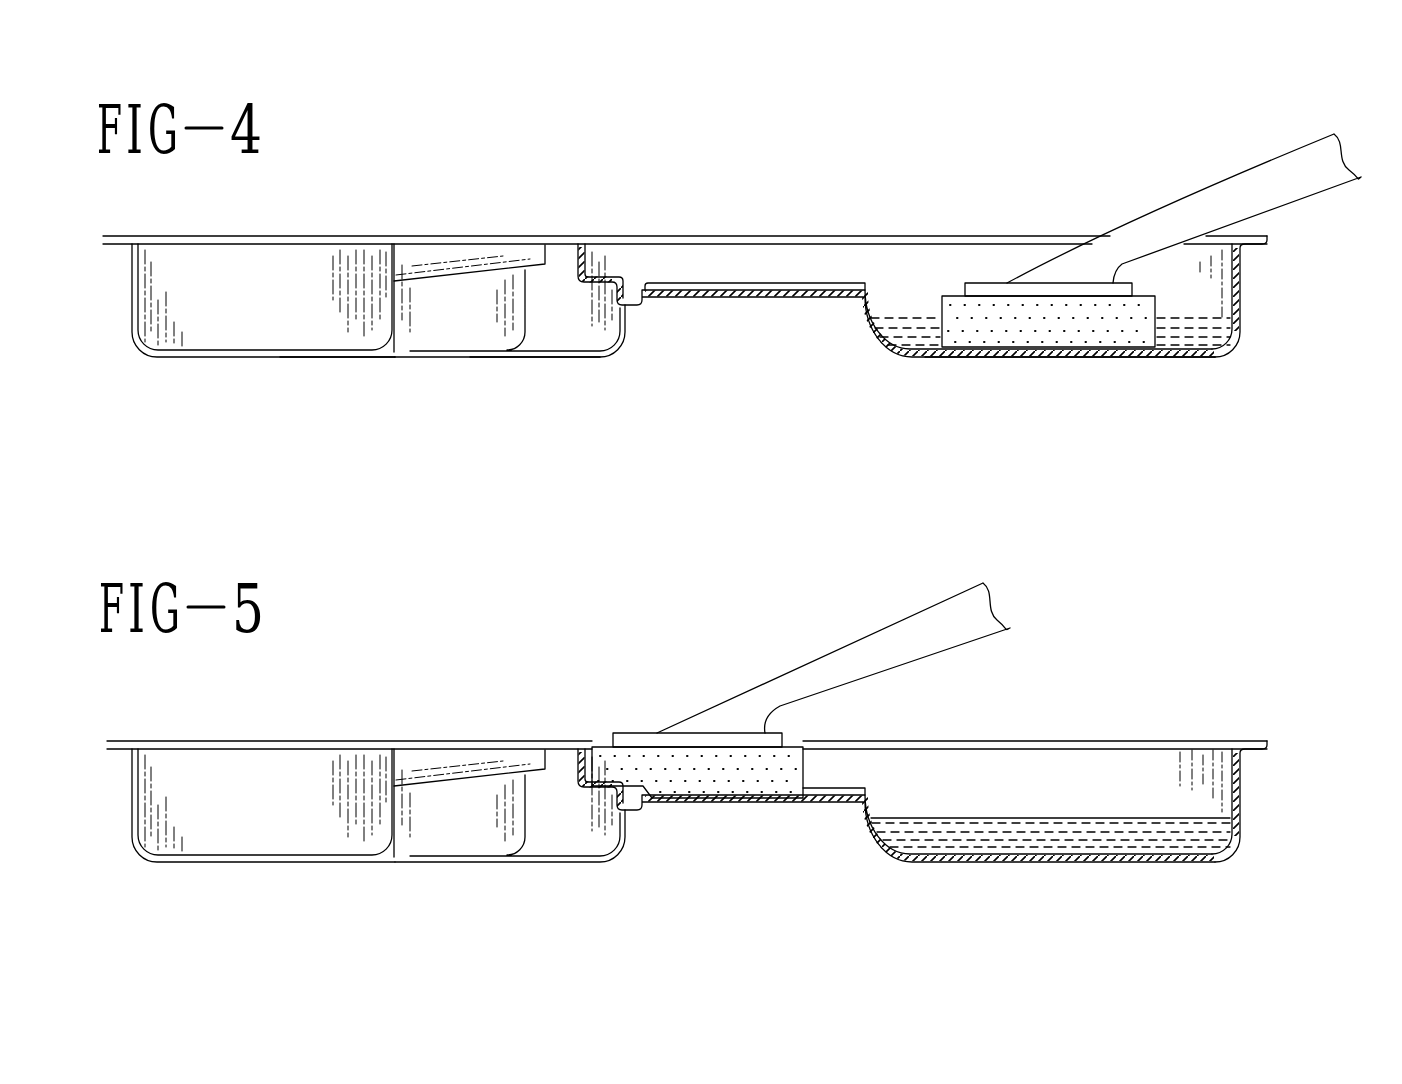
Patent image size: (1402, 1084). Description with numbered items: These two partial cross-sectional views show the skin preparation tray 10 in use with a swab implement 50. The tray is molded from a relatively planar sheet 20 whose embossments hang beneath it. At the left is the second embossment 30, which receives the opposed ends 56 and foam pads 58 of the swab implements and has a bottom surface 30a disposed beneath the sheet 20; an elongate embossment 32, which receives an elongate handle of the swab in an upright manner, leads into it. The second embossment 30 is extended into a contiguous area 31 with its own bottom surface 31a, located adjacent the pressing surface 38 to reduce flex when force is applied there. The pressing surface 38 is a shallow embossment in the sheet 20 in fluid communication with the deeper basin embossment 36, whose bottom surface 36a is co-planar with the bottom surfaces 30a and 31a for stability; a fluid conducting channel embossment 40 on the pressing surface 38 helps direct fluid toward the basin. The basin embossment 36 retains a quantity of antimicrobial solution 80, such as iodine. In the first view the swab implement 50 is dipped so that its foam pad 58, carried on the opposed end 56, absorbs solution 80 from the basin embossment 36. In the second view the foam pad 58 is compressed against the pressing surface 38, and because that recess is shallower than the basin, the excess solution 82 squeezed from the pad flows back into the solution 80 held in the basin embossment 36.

In FIG. 4, the skin preparation tray 10 is at (128, 386).
In FIG. 5, the skin preparation tray 10 is at (1292, 668).
In FIG. 4, the planar sheet 20 is at (548, 238).
In FIG. 5, the planar sheet 20 is at (535, 742).
In FIG. 4, the second embossment 30 is at (234, 315).
In FIG. 5, the second embossment 30 is at (243, 832).
In FIG. 4, the bottom surface of second embossment 30a is at (328, 357).
In FIG. 4, the contiguous area 31 is at (543, 327).
In FIG. 5, the contiguous area 31 is at (587, 835).
In FIG. 4, the bottom surface of contiguous area 31a is at (565, 357).
In FIG. 4, the elongate embossment 32 is at (438, 265).
In FIG. 4, the basin embossment 36 is at (1208, 280).
In FIG. 5, the basin embossment 36 is at (1173, 785).
In FIG. 4, the bottom surface of basin embossment 36a is at (1050, 358).
In FIG. 4, the pressing surface 38 is at (698, 283).
In FIG. 5, the pressing surface 38 is at (625, 785).
In FIG. 4, the fluid conducting channel embossment 40 is at (820, 289).
In FIG. 5, the fluid conducting channel embossment 40 is at (820, 806).
In FIG. 4, the swab implement 50 is at (1250, 165).
In FIG. 4, the opposed end 56 is at (985, 286).
In FIG. 4, the foam pad 58 is at (943, 302).
In FIG. 4, the antimicrobial solution 80 is at (1218, 333).
In FIG. 5, the antimicrobial solution 80 is at (1218, 836).
In FIG. 5, the excess solution 82 is at (860, 790).